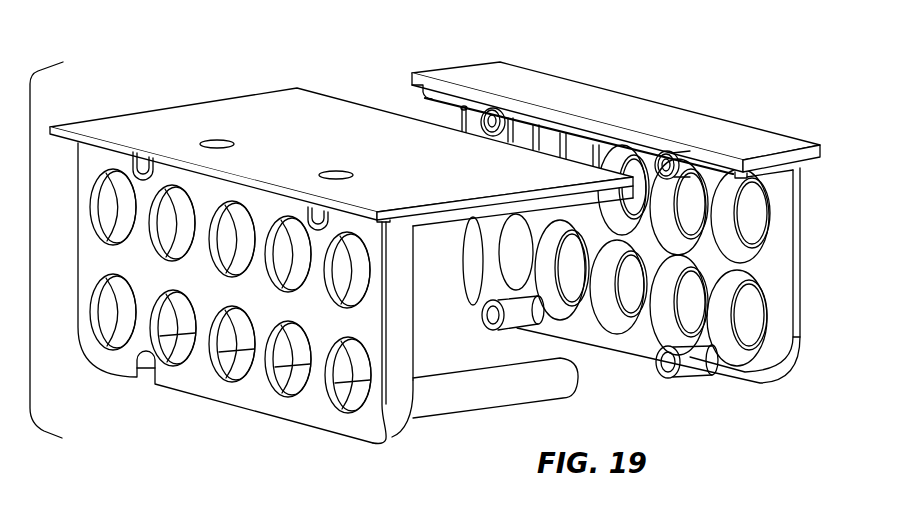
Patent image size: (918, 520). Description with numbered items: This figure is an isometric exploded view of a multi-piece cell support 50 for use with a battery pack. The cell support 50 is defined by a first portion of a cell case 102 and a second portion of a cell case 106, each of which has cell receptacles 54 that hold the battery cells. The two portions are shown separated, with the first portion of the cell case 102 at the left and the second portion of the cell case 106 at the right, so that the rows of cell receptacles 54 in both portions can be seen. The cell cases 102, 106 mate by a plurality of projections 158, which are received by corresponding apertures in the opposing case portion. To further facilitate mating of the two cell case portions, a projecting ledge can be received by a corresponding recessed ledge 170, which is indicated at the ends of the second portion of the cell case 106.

The cell support 50 is at (330, 54).
The cell receptacles 54 is at (88, 260).
The first portion of a cell case 102 is at (184, 115).
The second portion of a cell case 106 is at (620, 96).
The projections 158 is at (508, 117).
The recessed ledge 170 is at (425, 98).